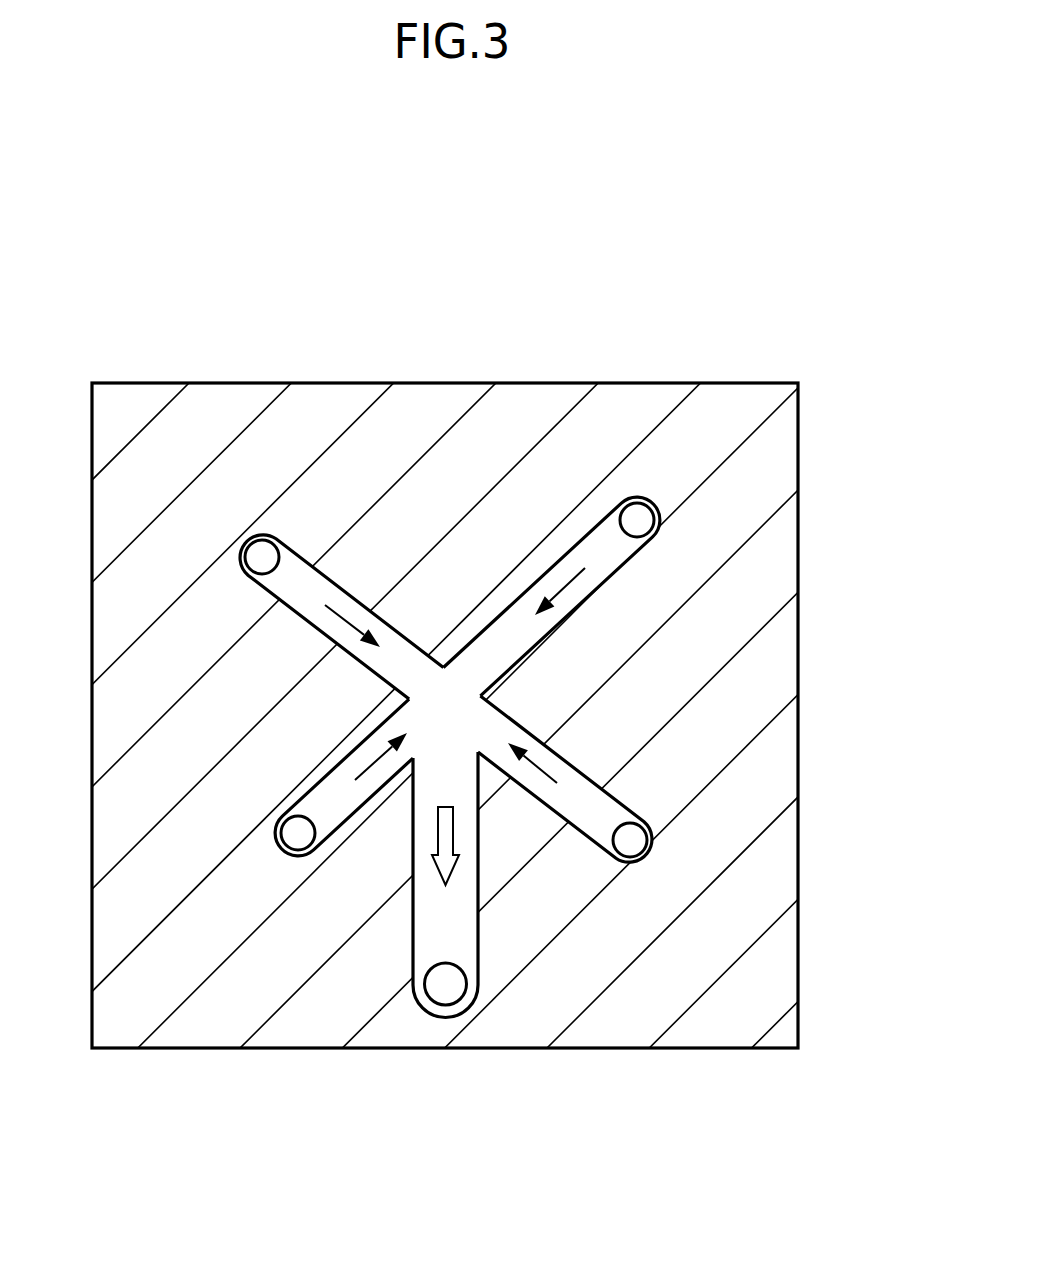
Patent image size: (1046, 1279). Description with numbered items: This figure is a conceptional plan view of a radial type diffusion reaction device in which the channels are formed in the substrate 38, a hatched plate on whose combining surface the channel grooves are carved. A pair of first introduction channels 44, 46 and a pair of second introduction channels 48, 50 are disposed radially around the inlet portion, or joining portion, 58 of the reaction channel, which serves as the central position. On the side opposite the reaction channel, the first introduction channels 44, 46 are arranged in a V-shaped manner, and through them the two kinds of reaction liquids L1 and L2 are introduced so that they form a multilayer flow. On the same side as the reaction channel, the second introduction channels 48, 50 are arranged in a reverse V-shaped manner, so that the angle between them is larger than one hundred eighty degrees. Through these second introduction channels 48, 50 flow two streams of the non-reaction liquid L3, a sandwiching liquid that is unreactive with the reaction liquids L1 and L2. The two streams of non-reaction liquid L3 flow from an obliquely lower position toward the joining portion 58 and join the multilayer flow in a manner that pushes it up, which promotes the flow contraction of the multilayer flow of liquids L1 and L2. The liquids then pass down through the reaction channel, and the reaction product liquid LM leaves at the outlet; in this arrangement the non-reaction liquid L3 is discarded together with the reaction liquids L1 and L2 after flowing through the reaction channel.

The substrate 38 is at (798, 502).
The first introduction channel 44 is at (302, 590).
The first introduction channel 46 is at (545, 588).
The second introduction channel 48 is at (338, 810).
The second introduction channel 50 is at (577, 810).
The inlet portion (joining portion) 58 is at (448, 708).
The reaction liquid L1 is at (262, 533).
The reaction liquid L2 is at (637, 497).
The non-reaction liquid L3 is at (272, 834).
The reaction product liquid LM is at (446, 984).